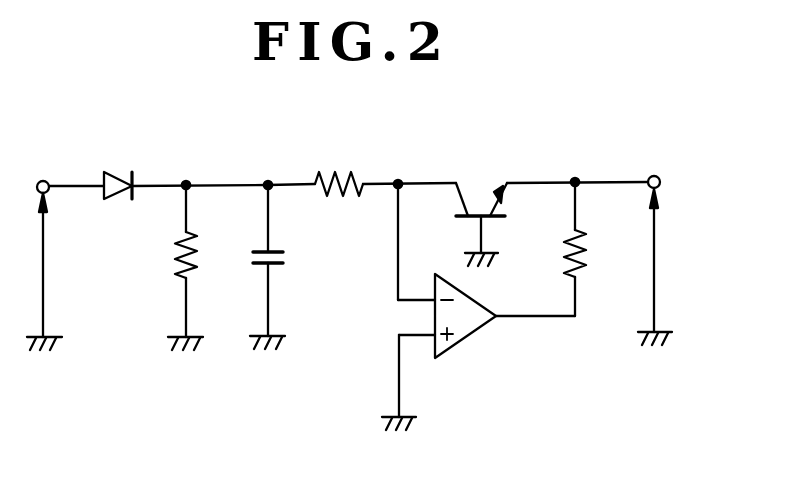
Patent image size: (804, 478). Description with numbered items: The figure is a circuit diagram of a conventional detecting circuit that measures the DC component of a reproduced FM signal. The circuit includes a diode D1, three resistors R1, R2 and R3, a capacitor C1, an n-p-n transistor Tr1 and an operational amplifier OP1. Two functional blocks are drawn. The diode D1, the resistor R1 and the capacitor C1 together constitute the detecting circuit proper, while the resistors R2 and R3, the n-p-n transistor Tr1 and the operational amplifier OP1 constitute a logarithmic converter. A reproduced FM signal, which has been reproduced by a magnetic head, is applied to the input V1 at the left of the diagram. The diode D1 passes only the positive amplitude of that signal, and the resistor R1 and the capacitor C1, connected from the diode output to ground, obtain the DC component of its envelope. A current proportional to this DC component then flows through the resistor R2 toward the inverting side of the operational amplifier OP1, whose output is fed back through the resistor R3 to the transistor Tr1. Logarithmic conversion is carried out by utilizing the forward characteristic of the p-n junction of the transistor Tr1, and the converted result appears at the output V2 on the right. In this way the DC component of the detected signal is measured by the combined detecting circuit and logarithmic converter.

The diode D1 is at (121, 168).
The resistor R1 is at (172, 258).
The resistor R2 is at (338, 172).
The capacitor C1 is at (287, 253).
The n-p-n transistor Tr1 is at (476, 198).
The operational amplifier OP1 is at (472, 337).
The resistor R3 is at (588, 248).
The input V1 is at (39, 265).
The output V2 is at (661, 260).